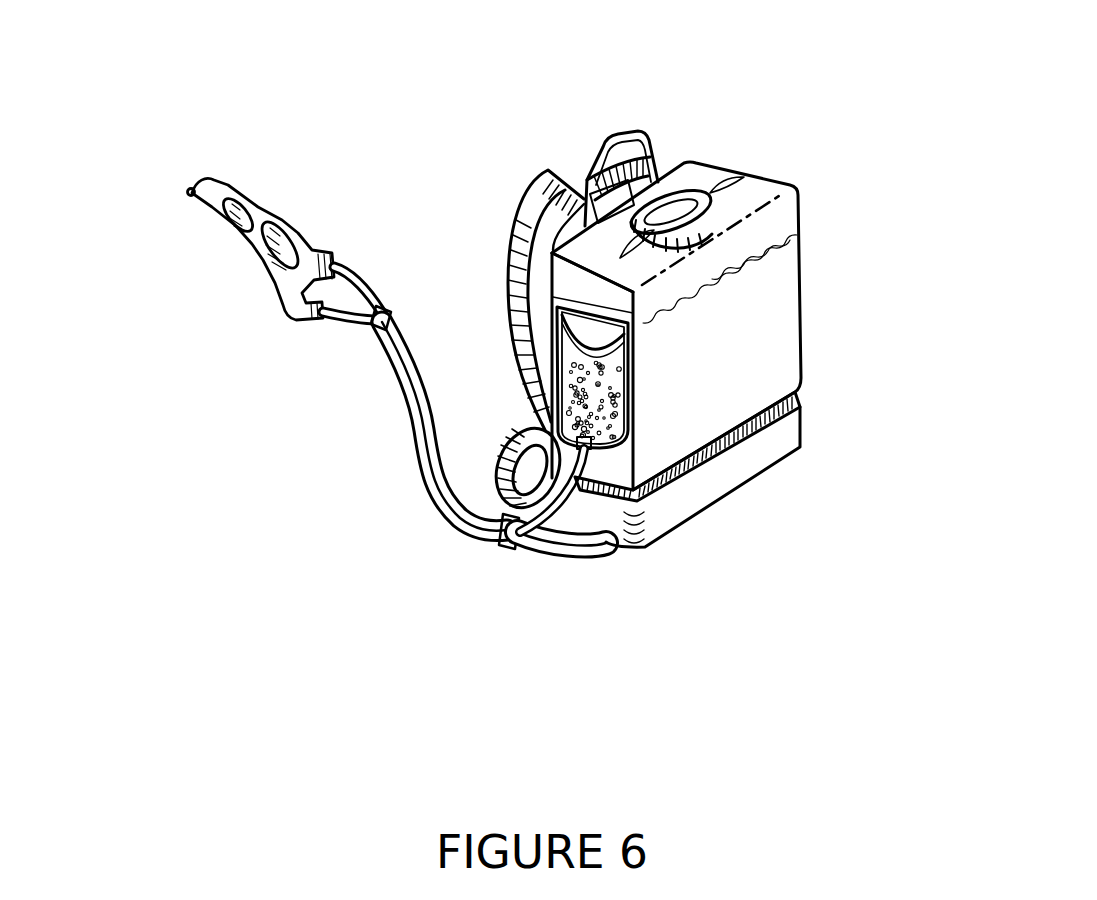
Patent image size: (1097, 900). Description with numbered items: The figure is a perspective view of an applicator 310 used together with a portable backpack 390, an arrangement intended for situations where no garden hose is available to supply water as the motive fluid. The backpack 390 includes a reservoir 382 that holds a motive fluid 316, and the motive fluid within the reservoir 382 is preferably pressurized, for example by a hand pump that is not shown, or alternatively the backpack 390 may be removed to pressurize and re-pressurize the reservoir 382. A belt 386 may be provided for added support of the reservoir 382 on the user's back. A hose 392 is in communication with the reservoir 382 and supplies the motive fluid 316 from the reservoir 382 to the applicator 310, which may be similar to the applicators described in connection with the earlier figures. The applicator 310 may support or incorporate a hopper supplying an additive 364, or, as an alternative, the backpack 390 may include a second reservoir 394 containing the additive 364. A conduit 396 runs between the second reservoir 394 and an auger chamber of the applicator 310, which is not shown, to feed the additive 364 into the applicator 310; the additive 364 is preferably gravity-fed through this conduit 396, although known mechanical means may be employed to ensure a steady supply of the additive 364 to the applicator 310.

The applicator 310 is at (198, 255).
The belt 386 is at (472, 525).
The portable backpack 390 is at (790, 150).
The reservoir 382 is at (790, 318).
The motive fluid 316 is at (736, 386).
The additive 364 is at (607, 398).
The second reservoir 394 is at (545, 172).
The hose 392 is at (537, 550).
The conduit 396 is at (590, 550).